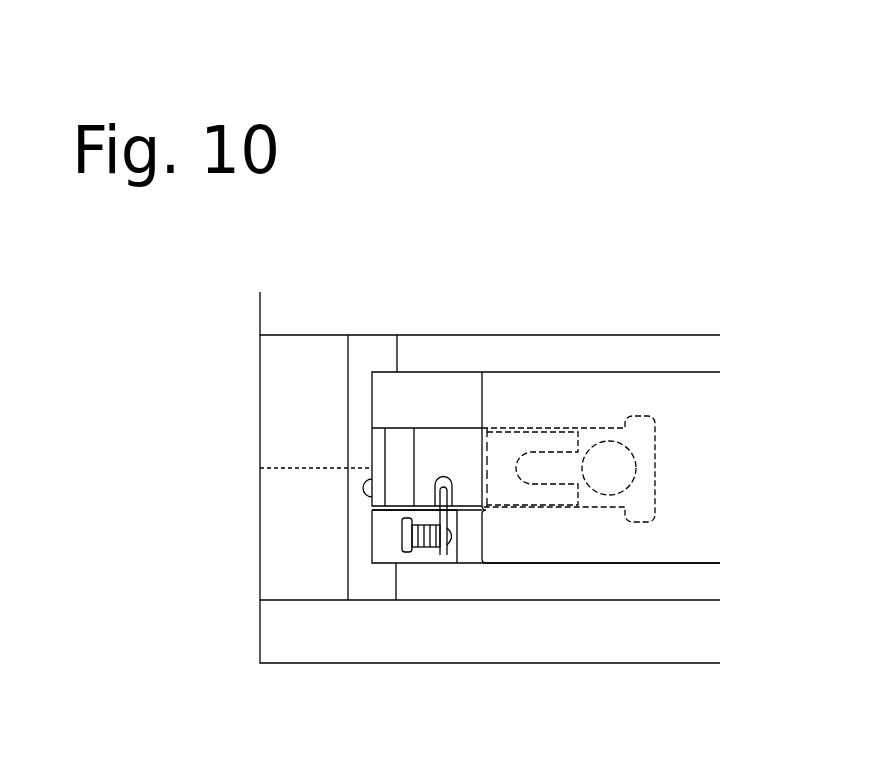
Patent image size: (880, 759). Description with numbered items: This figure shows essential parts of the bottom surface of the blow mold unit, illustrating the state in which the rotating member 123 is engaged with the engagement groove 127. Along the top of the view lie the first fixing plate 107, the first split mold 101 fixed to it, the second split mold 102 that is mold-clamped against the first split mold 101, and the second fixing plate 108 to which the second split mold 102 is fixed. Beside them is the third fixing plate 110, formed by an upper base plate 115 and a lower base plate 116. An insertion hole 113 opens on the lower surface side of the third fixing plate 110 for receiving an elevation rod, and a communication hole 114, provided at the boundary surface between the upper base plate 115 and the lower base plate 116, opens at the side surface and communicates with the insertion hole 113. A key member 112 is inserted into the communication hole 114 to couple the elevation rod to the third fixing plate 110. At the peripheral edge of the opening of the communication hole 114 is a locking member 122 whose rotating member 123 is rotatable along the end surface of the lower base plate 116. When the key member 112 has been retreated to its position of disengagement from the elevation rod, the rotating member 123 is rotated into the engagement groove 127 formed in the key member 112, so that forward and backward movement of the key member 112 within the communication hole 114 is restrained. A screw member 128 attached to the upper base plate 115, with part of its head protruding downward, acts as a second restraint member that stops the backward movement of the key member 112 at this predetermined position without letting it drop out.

The first fixing plate 107 is at (291, 316).
The first split mold 101 is at (279, 373).
The second split mold 102 is at (285, 562).
The second fixing plate 108 is at (278, 645).
The third fixing plate 110 is at (546, 394).
The key member 112 is at (438, 440).
The insertion hole 113 is at (605, 470).
The communication hole 114 is at (568, 469).
The upper base plate 115 is at (463, 385).
The lower base plate 116 is at (512, 390).
The locking member 122 is at (411, 576).
The rotating member 123 is at (441, 500).
The engagement groove 127 is at (437, 480).
The screw member 128 is at (364, 488).